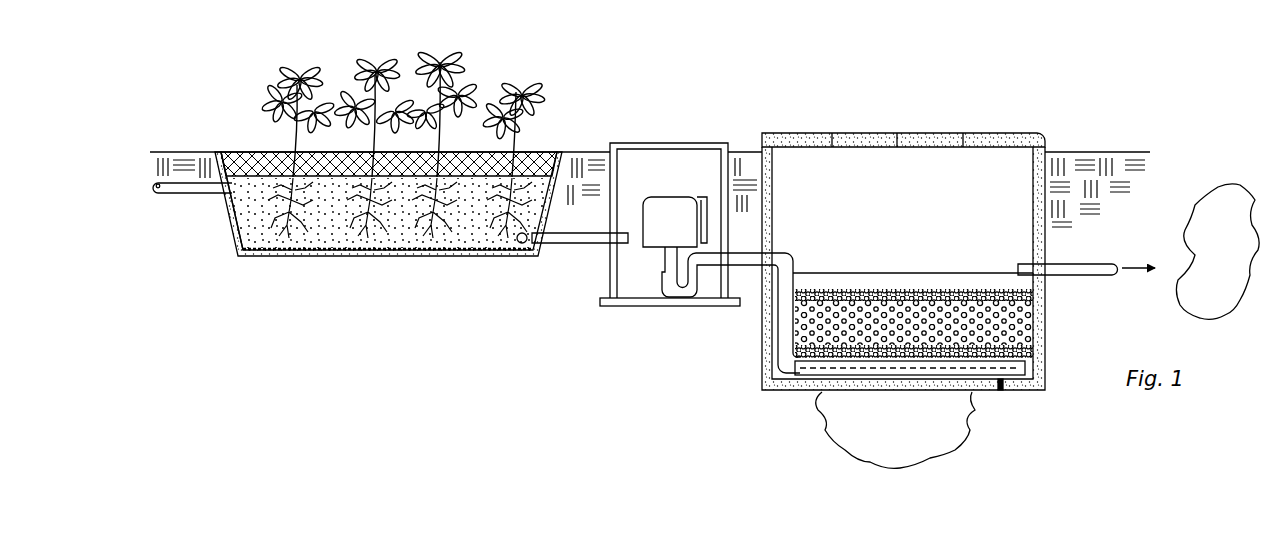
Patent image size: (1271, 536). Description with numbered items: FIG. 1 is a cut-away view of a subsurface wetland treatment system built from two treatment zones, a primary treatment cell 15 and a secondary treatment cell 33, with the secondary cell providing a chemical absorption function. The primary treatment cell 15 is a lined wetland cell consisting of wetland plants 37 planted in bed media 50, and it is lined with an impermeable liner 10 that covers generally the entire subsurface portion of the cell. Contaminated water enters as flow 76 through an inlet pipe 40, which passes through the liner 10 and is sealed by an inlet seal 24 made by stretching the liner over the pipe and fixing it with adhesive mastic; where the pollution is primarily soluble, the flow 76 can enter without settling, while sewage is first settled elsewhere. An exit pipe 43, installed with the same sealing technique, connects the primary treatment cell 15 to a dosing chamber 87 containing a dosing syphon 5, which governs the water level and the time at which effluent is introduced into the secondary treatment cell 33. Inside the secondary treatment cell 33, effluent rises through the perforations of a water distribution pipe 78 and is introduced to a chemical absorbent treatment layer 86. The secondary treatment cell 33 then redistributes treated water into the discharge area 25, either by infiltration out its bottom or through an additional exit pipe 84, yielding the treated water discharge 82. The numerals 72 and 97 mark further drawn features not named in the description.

The dosing syphon 5 is at (663, 228).
The impermeable liner 10 is at (240, 260).
The primary treatment cell 15 is at (273, 265).
The inlet seal 24 is at (232, 222).
The discharge area 25 is at (1227, 269).
The secondary treatment cell 33 is at (780, 178).
The wetland plants 37 is at (513, 90).
The inlet pipe 40 is at (200, 198).
The exit pipe 43 is at (540, 241).
The bed media 50 is at (432, 238).
The tank lid 72 is at (1016, 128).
The flow of untreated water 76 is at (146, 192).
The water distribution pipe 78 is at (1003, 388).
The treated water discharge 82 is at (1154, 267).
The additional exit pipe 84 is at (628, 254).
The chemical absorbent treatment layer 86 is at (818, 334).
The dosing chamber 87 is at (647, 170).
The float switch 97 is at (699, 180).